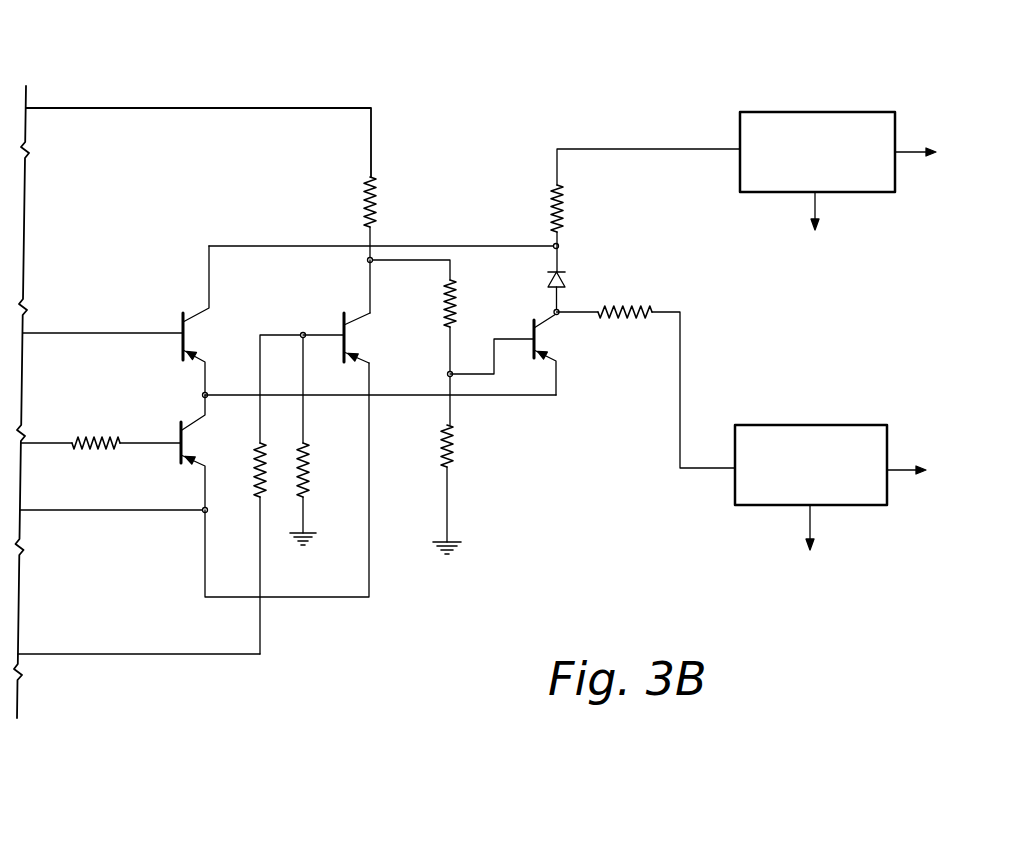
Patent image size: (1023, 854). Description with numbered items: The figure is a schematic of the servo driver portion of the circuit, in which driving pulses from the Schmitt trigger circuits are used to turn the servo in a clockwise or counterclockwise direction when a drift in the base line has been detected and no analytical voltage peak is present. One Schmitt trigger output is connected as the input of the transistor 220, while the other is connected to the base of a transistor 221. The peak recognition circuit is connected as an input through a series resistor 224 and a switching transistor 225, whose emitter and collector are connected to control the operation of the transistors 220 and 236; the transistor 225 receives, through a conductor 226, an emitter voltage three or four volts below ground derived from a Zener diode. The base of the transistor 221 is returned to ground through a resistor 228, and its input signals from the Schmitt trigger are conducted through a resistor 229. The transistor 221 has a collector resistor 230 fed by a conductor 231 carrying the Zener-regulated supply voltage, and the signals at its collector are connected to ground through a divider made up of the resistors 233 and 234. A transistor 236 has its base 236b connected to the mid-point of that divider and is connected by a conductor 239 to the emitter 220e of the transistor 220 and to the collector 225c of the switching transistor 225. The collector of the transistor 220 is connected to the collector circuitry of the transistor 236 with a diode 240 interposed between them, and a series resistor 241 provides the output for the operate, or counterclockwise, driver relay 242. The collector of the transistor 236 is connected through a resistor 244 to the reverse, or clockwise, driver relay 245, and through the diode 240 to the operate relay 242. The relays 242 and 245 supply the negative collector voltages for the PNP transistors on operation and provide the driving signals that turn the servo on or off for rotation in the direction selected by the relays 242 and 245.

The transistor 220 is at (186, 330).
The emitter of transistor 220 220e is at (183, 357).
The transistor 221 is at (347, 334).
The series resistor 224 is at (93, 440).
The switching transistor 225 is at (186, 443).
The collector of switching transistor 225 225c is at (190, 425).
The conductor 226 is at (66, 512).
The resistor 228 is at (312, 467).
The resistor 229 is at (250, 483).
The collector resistor 230 is at (378, 205).
The conductor 231 is at (190, 108).
The resistor 233 is at (460, 285).
The resistor 234 is at (455, 447).
The transistor 236 is at (540, 336).
The base of transistor 236 236b is at (510, 338).
The conductor 239 is at (540, 398).
The diode 240 is at (568, 285).
The series resistor 241 is at (565, 208).
The operate (counterclockwise) driver relay 242 is at (765, 112).
The resistor 244 is at (640, 310).
The reverse (clockwise) driver relay 245 is at (843, 425).